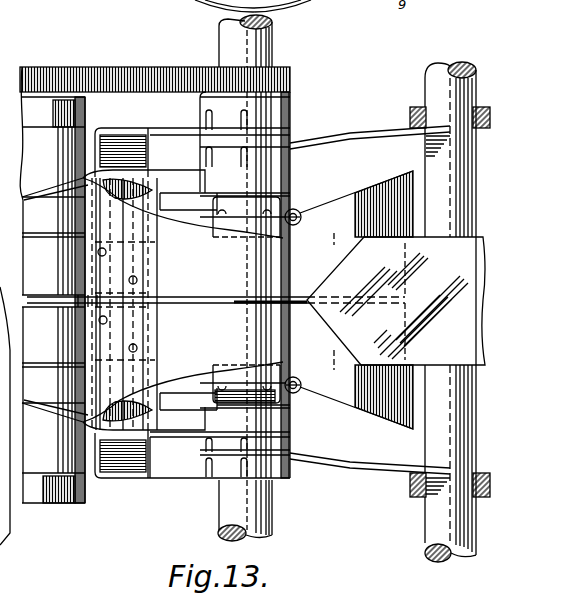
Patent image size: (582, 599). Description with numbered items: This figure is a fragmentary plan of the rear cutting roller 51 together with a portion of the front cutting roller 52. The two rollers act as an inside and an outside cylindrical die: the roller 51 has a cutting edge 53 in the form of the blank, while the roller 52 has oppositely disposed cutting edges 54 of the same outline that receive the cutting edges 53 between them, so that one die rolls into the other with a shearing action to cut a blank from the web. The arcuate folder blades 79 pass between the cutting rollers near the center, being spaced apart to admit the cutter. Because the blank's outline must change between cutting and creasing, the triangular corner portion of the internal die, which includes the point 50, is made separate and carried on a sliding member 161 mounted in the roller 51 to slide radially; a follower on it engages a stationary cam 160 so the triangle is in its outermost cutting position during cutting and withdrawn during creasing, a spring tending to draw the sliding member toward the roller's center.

The triangle corner point 50 is at (10, 35).
The rear cutting roller 51 is at (400, 200).
The front cutting roller 52 is at (80, 208).
The cutting edge 53 is at (162, 200).
The cutting edges 54 is at (79, 178).
The folder blade 79 is at (77, 272).
The stationary cam 160 is at (283, 200).
The sliding member 161 is at (278, 222).